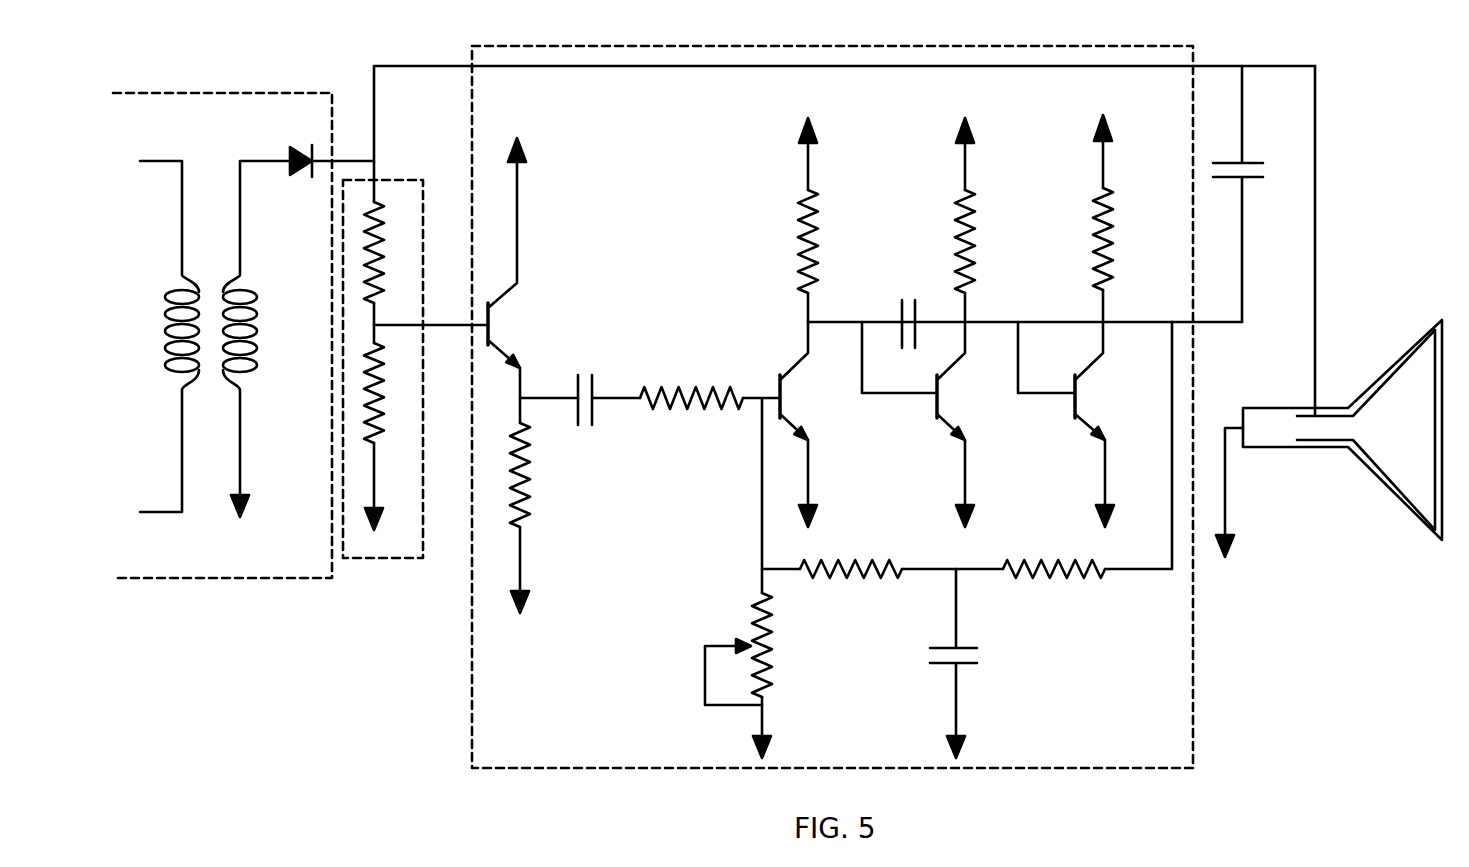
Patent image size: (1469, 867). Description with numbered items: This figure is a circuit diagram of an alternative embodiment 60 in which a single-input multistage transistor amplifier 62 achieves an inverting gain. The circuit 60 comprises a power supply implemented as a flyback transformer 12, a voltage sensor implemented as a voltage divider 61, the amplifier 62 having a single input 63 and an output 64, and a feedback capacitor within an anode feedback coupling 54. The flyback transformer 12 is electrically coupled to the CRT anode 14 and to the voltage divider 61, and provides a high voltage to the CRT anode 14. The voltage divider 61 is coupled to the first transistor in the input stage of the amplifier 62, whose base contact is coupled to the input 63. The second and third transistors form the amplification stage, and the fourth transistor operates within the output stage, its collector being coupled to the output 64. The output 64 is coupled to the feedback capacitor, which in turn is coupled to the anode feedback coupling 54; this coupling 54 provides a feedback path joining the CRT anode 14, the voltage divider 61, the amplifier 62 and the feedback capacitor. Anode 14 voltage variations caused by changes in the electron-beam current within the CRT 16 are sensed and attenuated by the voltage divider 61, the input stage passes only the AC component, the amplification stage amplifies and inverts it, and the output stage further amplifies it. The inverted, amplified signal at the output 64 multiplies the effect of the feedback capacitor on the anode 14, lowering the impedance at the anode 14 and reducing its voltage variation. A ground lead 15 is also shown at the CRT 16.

The flyback transformer 12 is at (248, 93).
The voltage divider 61 is at (372, 560).
The input 63 is at (437, 326).
The alternative embodiment 60 is at (335, 764).
The single-input multistage transistor amplifier 62 is at (1195, 663).
The anode feedback coupling 54 is at (1242, 140).
The output 64 is at (1245, 320).
The CRT anode 14 is at (1315, 405).
The transducer ground lead 15 is at (1228, 452).
The CRT 16 is at (1380, 485).